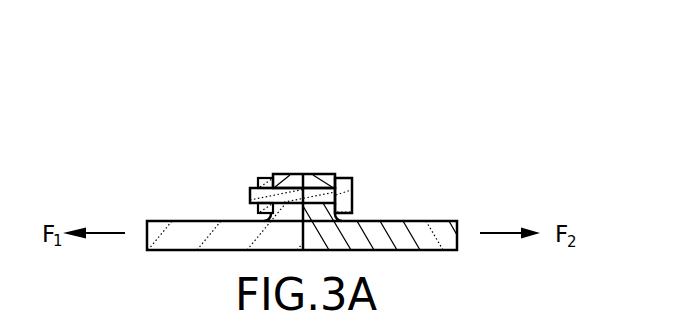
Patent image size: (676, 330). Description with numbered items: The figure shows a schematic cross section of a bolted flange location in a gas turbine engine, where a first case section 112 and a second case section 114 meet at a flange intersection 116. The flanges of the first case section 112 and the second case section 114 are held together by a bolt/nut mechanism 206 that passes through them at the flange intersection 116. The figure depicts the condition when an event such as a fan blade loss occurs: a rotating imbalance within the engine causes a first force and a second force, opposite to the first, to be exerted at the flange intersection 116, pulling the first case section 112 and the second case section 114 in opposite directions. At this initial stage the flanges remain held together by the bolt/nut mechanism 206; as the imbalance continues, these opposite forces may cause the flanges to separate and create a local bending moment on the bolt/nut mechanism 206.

The first case section 112 is at (176, 233).
The second case section 114 is at (450, 232).
The flange intersection 116 is at (304, 175).
The bolt/nut mechanism 206 is at (259, 185).